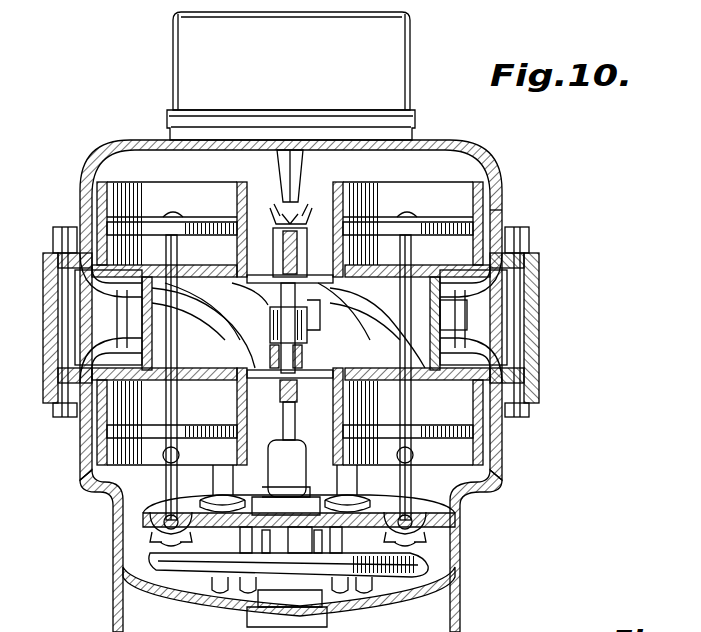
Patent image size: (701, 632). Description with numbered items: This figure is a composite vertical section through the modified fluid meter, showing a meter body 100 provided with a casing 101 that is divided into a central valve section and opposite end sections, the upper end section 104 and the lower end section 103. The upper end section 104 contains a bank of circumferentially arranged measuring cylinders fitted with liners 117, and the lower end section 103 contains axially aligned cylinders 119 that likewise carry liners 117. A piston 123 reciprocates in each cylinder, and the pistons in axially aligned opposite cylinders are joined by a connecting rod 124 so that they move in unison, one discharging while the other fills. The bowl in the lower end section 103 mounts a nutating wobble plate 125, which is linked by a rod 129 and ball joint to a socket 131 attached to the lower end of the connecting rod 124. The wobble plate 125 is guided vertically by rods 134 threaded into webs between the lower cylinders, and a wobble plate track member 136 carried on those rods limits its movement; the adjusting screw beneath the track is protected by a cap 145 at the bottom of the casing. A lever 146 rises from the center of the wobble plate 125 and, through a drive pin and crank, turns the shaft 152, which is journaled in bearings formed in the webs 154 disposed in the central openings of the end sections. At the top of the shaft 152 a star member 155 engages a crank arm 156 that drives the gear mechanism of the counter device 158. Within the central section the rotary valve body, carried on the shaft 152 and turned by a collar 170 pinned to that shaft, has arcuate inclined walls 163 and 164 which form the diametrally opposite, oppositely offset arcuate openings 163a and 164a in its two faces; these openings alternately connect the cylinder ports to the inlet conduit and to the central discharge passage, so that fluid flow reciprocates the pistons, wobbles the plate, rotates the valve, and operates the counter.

The meter body 100 is at (503, 175).
The casing 101 is at (503, 227).
The lower end section 103 is at (470, 492).
The upper end section 104 is at (432, 182).
The liners 117 is at (105, 197).
The cylinders 119 is at (110, 415).
The piston 123 is at (462, 224).
The connecting rod 124 is at (168, 327).
The wobble plate 125 is at (426, 530).
The rod 129 is at (167, 503).
The socket 131 is at (164, 458).
The rods 134 is at (222, 545).
The wobble plate track member 136 is at (428, 564).
The cap 145 is at (322, 620).
The lever 146 is at (298, 460).
The shaft 152 is at (283, 317).
The webs 154 is at (366, 324).
The star member 155 is at (317, 200).
The crank arm 156 is at (287, 220).
The counter device 158 is at (291, 76).
The inclined wall 163 is at (210, 400).
The arcuate opening 163a is at (222, 293).
The inclined wall 164 is at (388, 332).
The arcuate opening 164a is at (400, 352).
The collar 170 is at (316, 388).